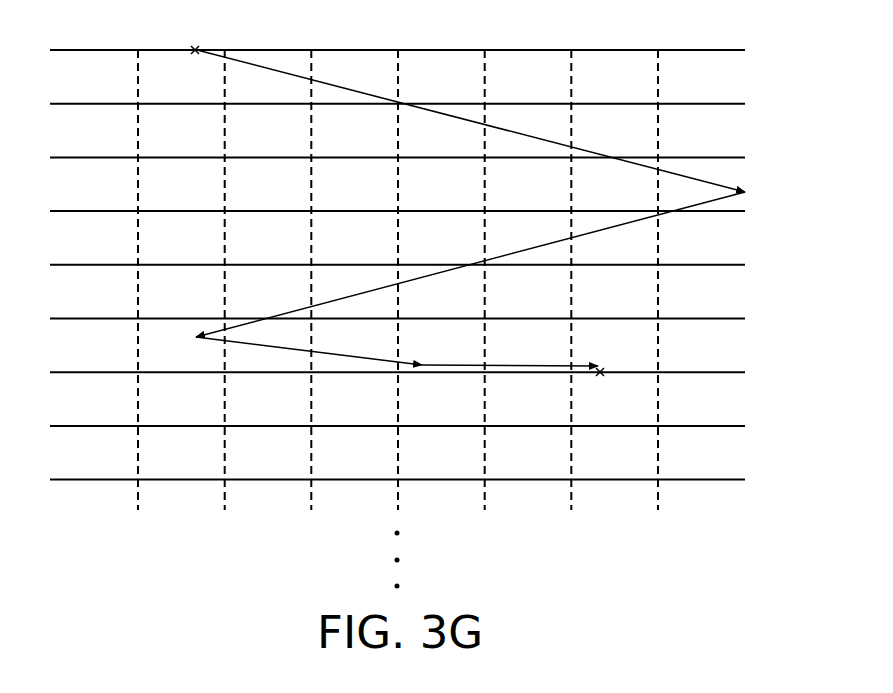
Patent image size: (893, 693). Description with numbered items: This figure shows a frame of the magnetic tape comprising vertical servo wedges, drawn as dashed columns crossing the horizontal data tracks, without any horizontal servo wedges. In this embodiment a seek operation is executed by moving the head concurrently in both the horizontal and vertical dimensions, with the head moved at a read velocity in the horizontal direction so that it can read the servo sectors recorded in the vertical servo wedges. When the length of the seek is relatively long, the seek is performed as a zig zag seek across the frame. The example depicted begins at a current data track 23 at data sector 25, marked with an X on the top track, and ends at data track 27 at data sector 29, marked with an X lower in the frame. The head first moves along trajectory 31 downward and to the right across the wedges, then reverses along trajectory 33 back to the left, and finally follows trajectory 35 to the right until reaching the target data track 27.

The current data track 23 is at (700, 51).
The target data track 27 is at (705, 373).
The data sector 25 is at (202, 44).
The data sector 29 is at (605, 380).
The first trajectory 31 is at (422, 110).
The second trajectory 33 is at (420, 281).
The third trajectory 35 is at (335, 352).